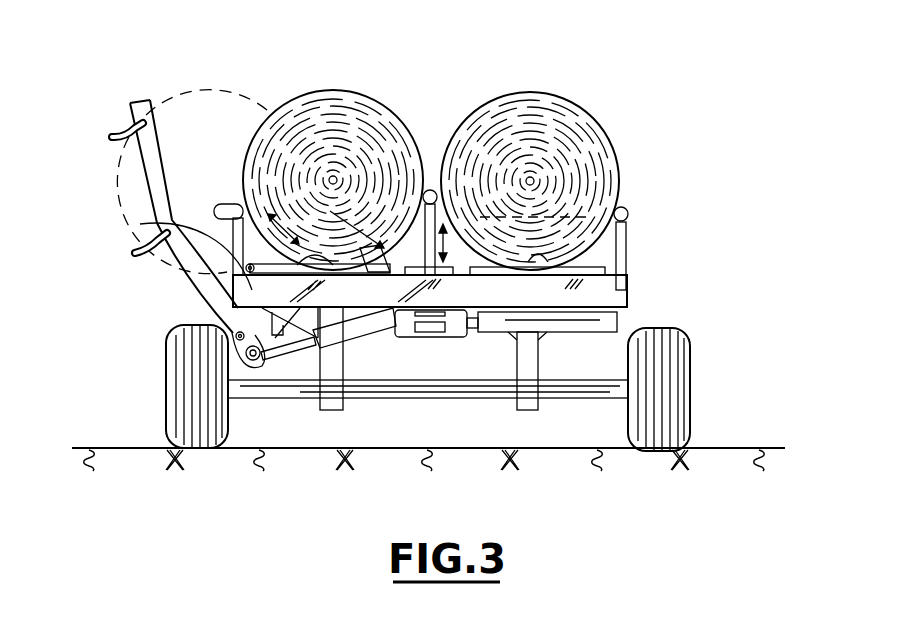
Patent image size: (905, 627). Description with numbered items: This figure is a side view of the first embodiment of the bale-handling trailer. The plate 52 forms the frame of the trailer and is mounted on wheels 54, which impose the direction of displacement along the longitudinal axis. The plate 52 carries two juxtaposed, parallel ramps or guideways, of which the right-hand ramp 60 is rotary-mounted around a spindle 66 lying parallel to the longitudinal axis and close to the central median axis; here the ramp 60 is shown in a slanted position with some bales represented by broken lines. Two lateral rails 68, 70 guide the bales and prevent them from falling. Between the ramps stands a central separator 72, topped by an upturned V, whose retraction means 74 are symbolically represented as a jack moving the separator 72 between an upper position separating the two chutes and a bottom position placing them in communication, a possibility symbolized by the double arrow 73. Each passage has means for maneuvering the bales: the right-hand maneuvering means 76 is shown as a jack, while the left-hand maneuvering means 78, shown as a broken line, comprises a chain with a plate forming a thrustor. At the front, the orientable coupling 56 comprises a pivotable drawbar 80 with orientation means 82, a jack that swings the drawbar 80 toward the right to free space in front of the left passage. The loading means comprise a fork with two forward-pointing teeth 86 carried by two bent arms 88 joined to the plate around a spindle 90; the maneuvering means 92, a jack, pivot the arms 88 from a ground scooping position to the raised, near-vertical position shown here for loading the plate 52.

The plate 52 is at (628, 290).
The wheels 54 is at (188, 407).
The orientable drawbar 56 is at (411, 345).
The ramp 60 is at (360, 267).
The spindle 66 is at (383, 260).
The lateral rail 68 is at (226, 204).
The lateral rail 70 is at (628, 212).
The central separator 72 is at (429, 190).
The double arrow 73 is at (447, 240).
The retraction means 74 is at (273, 350).
The maneuvering means 76 is at (140, 224).
The maneuvering means 78 is at (605, 250).
The drawbar 80 is at (460, 336).
The orientation means 82 is at (597, 325).
The teeth 86 is at (115, 135).
The bent arms 88 is at (148, 148).
The spindle 90 is at (215, 307).
The maneuvering means 92 is at (353, 337).